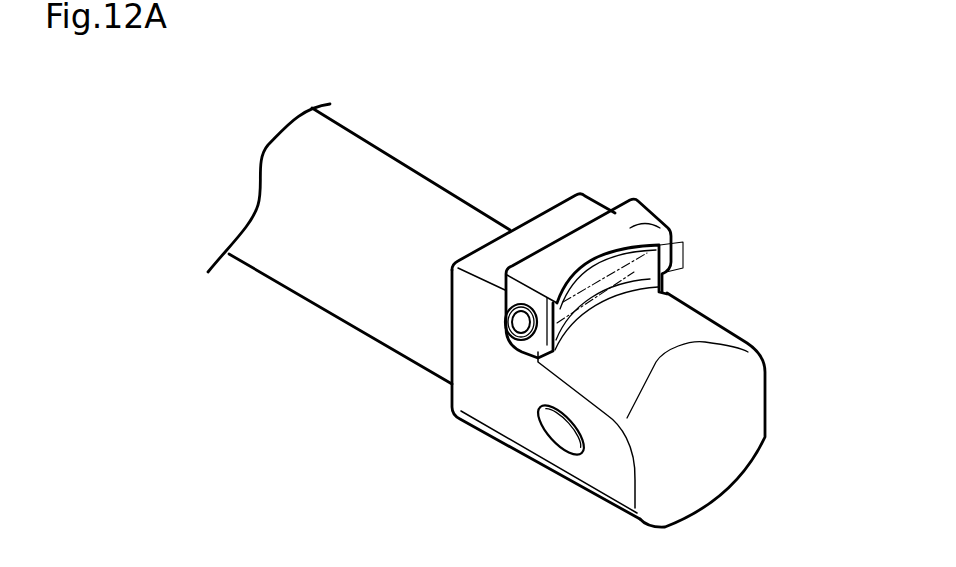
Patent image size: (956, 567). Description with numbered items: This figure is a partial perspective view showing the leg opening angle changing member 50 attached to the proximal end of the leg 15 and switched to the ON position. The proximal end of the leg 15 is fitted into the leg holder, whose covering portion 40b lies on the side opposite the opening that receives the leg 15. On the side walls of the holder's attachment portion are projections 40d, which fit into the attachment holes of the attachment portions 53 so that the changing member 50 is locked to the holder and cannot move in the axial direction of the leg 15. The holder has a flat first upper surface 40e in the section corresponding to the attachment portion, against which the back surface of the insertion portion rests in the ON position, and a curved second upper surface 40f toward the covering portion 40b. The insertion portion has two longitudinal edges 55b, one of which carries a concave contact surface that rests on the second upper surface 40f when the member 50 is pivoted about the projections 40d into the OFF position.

The leg 15 is at (404, 175).
The first upper surface 40e is at (552, 222).
The projections 40d is at (508, 321).
The covering portion 40b is at (737, 383).
The second upper surface 40f is at (670, 333).
The leg opening angle changing member 50 is at (645, 208).
The edges 55b is at (672, 263).
The attachment portions 53 is at (523, 357).